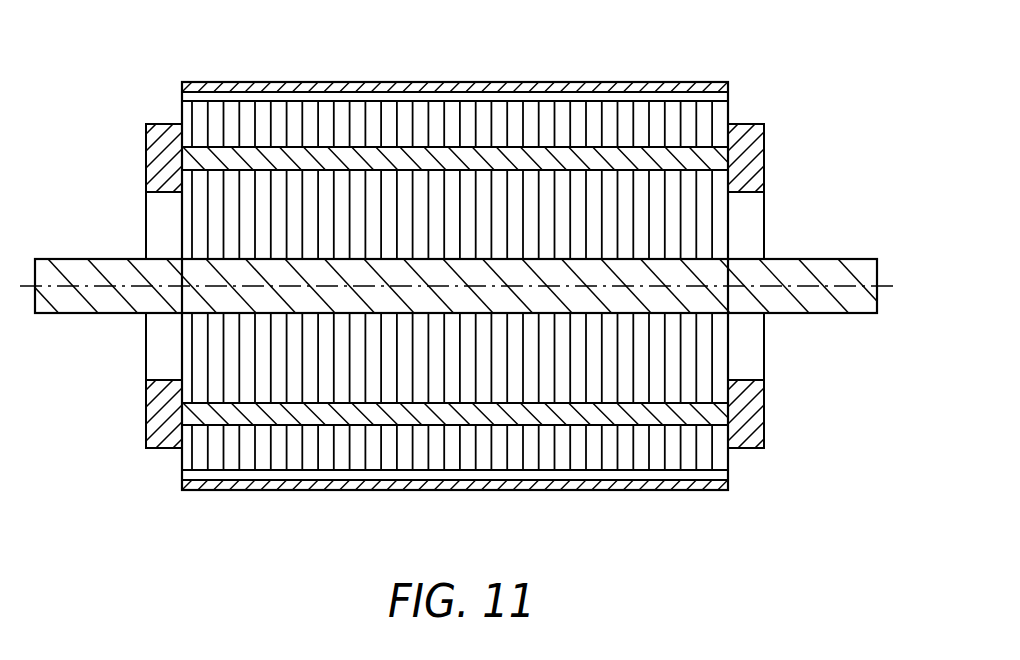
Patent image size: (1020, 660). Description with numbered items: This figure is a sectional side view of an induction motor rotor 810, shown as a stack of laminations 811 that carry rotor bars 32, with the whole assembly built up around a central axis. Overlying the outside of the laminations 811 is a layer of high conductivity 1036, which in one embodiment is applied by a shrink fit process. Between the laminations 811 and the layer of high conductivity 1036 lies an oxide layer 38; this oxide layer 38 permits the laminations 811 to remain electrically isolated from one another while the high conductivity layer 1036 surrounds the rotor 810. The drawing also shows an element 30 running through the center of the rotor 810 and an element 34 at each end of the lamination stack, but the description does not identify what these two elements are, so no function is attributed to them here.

The shaft 30 is at (818, 265).
The rotor bars 32 is at (594, 150).
The end cap 34 is at (753, 123).
The oxide layer 38 is at (508, 95).
The induction motor rotor 810 is at (168, 114).
The laminations 811 is at (297, 112).
The layer of high conductivity 1036 is at (428, 80).